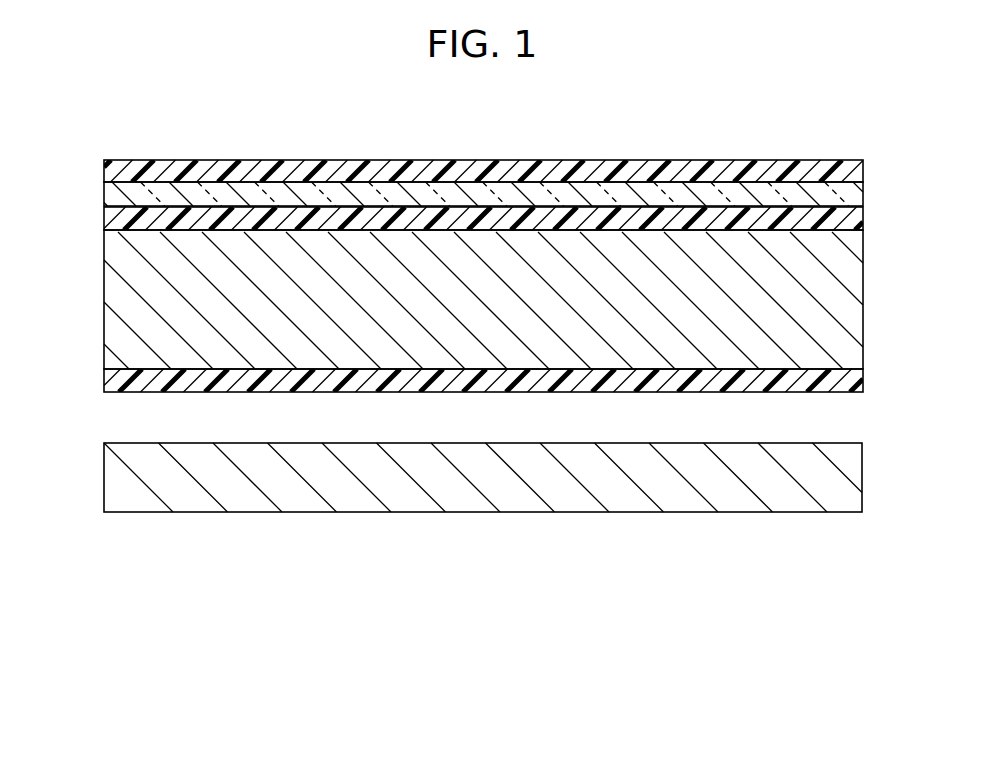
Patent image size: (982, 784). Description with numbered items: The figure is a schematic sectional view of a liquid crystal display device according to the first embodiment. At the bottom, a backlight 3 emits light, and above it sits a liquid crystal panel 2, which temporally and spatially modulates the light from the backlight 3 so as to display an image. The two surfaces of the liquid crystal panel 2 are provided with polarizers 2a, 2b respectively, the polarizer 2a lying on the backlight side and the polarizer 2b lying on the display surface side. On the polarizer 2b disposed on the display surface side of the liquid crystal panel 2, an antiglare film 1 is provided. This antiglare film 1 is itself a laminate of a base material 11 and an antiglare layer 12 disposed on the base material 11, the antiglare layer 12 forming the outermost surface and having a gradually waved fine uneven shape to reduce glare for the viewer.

The antiglare film 1 is at (479, 183).
The antiglare layer 12 is at (106, 175).
The base material 11 is at (106, 197).
The liquid crystal panel 2 is at (480, 299).
The polarizer 2b is at (106, 221).
The polarizer 2a is at (106, 383).
The backlight 3 is at (862, 480).